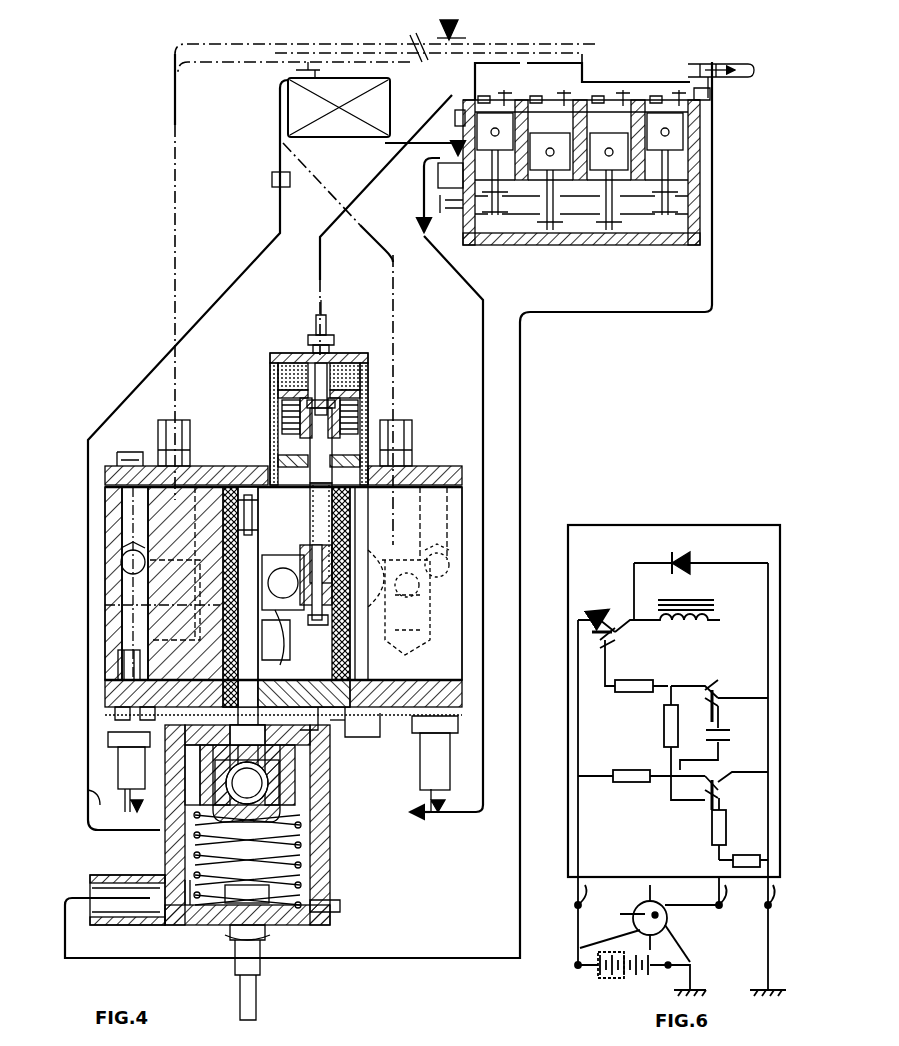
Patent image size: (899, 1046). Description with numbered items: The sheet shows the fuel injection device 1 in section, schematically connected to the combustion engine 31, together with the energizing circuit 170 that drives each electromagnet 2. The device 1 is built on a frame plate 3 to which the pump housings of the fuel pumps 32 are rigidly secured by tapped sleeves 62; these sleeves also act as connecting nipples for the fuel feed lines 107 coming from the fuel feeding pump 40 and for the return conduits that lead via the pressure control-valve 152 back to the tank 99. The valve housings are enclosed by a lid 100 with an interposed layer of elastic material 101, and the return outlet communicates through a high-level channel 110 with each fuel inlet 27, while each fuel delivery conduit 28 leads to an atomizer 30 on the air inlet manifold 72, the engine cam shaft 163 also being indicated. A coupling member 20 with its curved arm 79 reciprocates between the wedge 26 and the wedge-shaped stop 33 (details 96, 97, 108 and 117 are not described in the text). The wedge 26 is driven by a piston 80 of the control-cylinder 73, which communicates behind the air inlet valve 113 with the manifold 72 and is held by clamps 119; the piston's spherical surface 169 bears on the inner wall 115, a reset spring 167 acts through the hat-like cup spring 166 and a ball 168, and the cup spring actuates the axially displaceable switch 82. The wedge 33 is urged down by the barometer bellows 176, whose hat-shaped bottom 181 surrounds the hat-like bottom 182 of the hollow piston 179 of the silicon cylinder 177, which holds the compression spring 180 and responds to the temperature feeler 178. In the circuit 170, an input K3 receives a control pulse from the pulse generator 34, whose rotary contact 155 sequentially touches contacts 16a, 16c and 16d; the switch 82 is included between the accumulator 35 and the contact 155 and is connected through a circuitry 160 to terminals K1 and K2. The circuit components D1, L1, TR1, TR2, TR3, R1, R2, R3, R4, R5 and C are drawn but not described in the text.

In FIG. 4, the device 1 is at (92, 440).
In FIG. 6, the electromagnets 2 is at (722, 612).
In FIG. 4, the frame plate 3 is at (110, 712).
In FIG. 4, the coupling member 20 is at (262, 604).
In FIG. 4, the wedge 26 is at (268, 462).
In FIG. 4, the fuel inlet 27 is at (408, 630).
In FIG. 4, the fuel delivery conduit 28 is at (148, 440).
In FIG. 4, the atomizer 30 is at (453, 36).
In FIG. 4, the combustion engine 31 is at (622, 250).
In FIG. 4, the fuel pump 32 is at (90, 530).
In FIG. 4, the wedge 33 is at (335, 578).
In FIG. 4, the pulse generator 34 is at (712, 71).
In FIG. 6, the pulse generator 34 is at (691, 973).
In FIG. 6, the accumulator 35 is at (598, 978).
In FIG. 4, the fuel feeding pump 40 is at (438, 174).
In FIG. 4, the tapped sleeves 62 is at (118, 663).
In FIG. 4, the air inlet manifold 72 is at (705, 59).
In FIG. 4, the control-cylinder 73 is at (340, 906).
In FIG. 4, the curved arm 79 is at (283, 582).
In FIG. 4, the piston 80 is at (300, 772).
In FIG. 4, the switch 82 is at (255, 930).
In FIG. 6, the switch 82 is at (626, 974).
In FIG. 4, the pump chamber 96 is at (282, 640).
In FIG. 4, the bore 97 is at (204, 466).
In FIG. 4, the tank 99 is at (360, 128).
In FIG. 4, the lid 100 is at (110, 465).
In FIG. 4, the layer of elastic material 101 is at (105, 487).
In FIG. 4, the fuel feed lines 107 is at (112, 825).
In FIG. 4, the outer casing 108 is at (70, 786).
In FIG. 4, the high-level channel 110 is at (130, 565).
In FIG. 4, the air inlet valve 113 is at (740, 64).
In FIG. 4, the inner wall 115 is at (310, 820).
In FIG. 4, the outlet passage 117 is at (374, 760).
In FIG. 4, the clamps 119 is at (380, 793).
In FIG. 4, the pressure control-valve 152 is at (272, 176).
In FIG. 6, the rotary contact 155 is at (660, 915).
In FIG. 6, the circuitry 160 is at (643, 912).
In FIG. 4, the cam shaft 163 is at (688, 96).
In FIG. 4, the hat-like cup spring 166 is at (265, 840).
In FIG. 4, the reset spring 167 is at (300, 868).
In FIG. 4, the ball 168 is at (185, 858).
In FIG. 4, the spherical surface 169 is at (280, 760).
In FIG. 6, the circuit 170 is at (625, 522).
In FIG. 4, the barometer bellows 176 is at (284, 412).
In FIG. 4, the silicon cylinder 177 is at (280, 372).
In FIG. 4, the temperature feeler 178 is at (455, 118).
In FIG. 4, the piston 179 is at (290, 392).
In FIG. 4, the compression spring 180 is at (318, 528).
In FIG. 4, the bottom 181 is at (300, 436).
In FIG. 4, the hat-like bottom 182 is at (304, 526).
In FIG. 6, the diode D1 is at (690, 560).
In FIG. 6, the inductor L1 is at (690, 628).
In FIG. 6, the transistor TR1 is at (719, 790).
In FIG. 6, the transistor TR2 is at (719, 748).
In FIG. 6, the transistor TR3 is at (617, 720).
In FIG. 6, the resistor R1 is at (630, 782).
In FIG. 6, the resistor R2 is at (745, 855).
In FIG. 6, the resistor R3 is at (712, 822).
In FIG. 6, the resistor R4 is at (632, 692).
In FIG. 6, the resistor R5 is at (678, 728).
In FIG. 6, the capacitor C is at (730, 735).
In FIG. 6, the terminal K1 is at (566, 897).
In FIG. 6, the terminal K2 is at (774, 936).
In FIG. 6, the input terminal K3 is at (696, 908).
In FIG. 6, the contact 16a is at (687, 943).
In FIG. 6, the contact 16c is at (614, 913).
In FIG. 6, the contact 16d is at (610, 937).